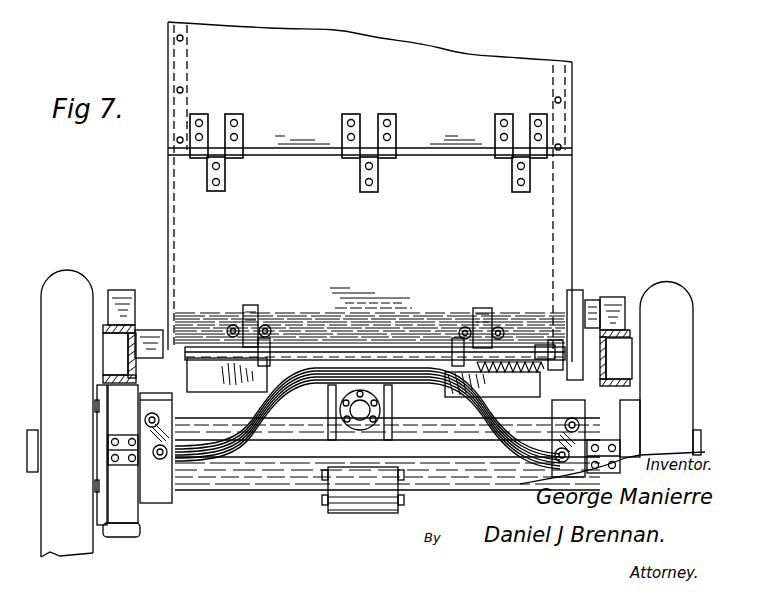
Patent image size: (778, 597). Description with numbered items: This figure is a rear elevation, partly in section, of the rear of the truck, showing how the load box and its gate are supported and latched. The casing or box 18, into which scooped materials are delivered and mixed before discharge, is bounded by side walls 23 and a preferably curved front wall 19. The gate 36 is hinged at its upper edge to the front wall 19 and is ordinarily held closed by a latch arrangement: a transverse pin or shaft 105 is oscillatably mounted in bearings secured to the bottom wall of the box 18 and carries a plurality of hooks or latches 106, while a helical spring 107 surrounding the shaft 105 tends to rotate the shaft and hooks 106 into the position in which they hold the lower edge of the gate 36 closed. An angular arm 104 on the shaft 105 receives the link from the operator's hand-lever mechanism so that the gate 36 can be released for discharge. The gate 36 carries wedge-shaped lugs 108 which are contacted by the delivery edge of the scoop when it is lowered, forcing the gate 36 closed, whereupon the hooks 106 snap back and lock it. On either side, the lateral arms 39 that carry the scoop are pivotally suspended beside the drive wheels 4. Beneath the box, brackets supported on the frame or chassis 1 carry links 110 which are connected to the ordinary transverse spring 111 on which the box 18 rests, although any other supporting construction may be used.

The frame or chassis 1 is at (222, 394).
The drive wheels 4 is at (694, 304).
The casing or box 18 is at (575, 64).
The front wall 19 is at (522, 60).
The side walls 23 is at (180, 10).
The gate 36 is at (574, 198).
The lateral arms 39 is at (115, 289).
The angular arm 104 is at (575, 366).
The transverse pin or shaft 105 is at (447, 370).
The hooks or latches 106 is at (270, 343).
The helical spring 107 is at (510, 379).
The lugs 108 is at (254, 305).
The links 110 is at (585, 440).
The transverse spring 111 is at (262, 428).